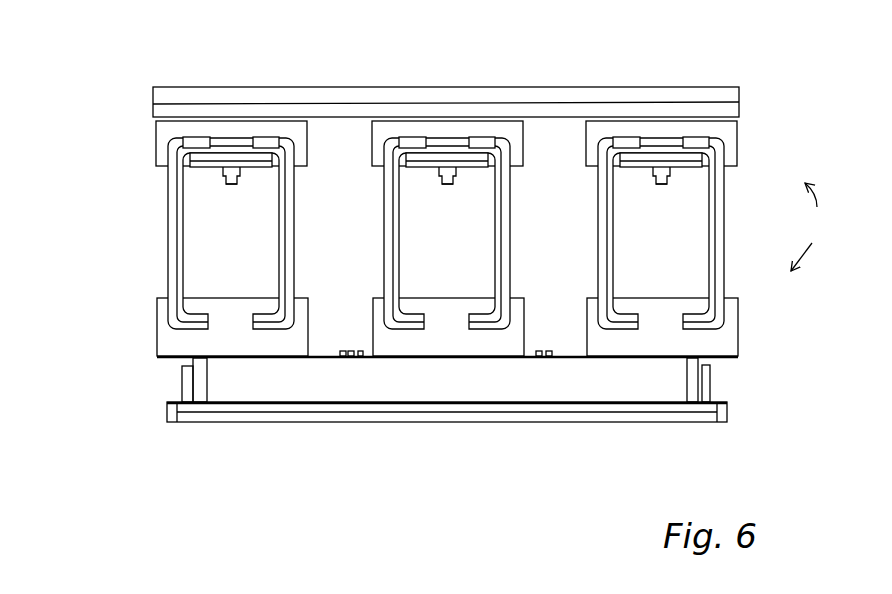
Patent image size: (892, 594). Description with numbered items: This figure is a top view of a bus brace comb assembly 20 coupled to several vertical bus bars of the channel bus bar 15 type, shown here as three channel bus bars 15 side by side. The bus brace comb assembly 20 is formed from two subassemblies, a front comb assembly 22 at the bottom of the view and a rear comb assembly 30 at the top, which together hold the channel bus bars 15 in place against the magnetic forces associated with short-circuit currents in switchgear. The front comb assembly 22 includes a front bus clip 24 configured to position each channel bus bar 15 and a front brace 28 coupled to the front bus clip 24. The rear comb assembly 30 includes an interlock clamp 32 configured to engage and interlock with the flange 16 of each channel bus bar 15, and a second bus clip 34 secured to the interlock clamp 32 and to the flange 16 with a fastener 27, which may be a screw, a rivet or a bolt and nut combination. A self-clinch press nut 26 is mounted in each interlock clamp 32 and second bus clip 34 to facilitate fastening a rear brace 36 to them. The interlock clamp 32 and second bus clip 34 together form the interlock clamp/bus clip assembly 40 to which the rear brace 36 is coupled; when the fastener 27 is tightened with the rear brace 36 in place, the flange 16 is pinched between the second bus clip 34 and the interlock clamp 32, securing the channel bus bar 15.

The channel bus bar 15 is at (166, 267).
The flange 16 is at (196, 136).
The bus brace comb assembly 20 is at (807, 227).
The front comb assembly 22 is at (397, 421).
The front bus clip 24 is at (162, 340).
The self-clinch press nut 26 is at (241, 170).
The fastener 27 is at (236, 184).
The front brace 28 is at (240, 415).
The rear comb assembly 30 is at (426, 103).
The interlock clamp 32 is at (208, 159).
The second bus clip 34 is at (300, 129).
The rear brace 36 is at (688, 92).
The interlock clamp/bus clip assembly 40 is at (424, 187).